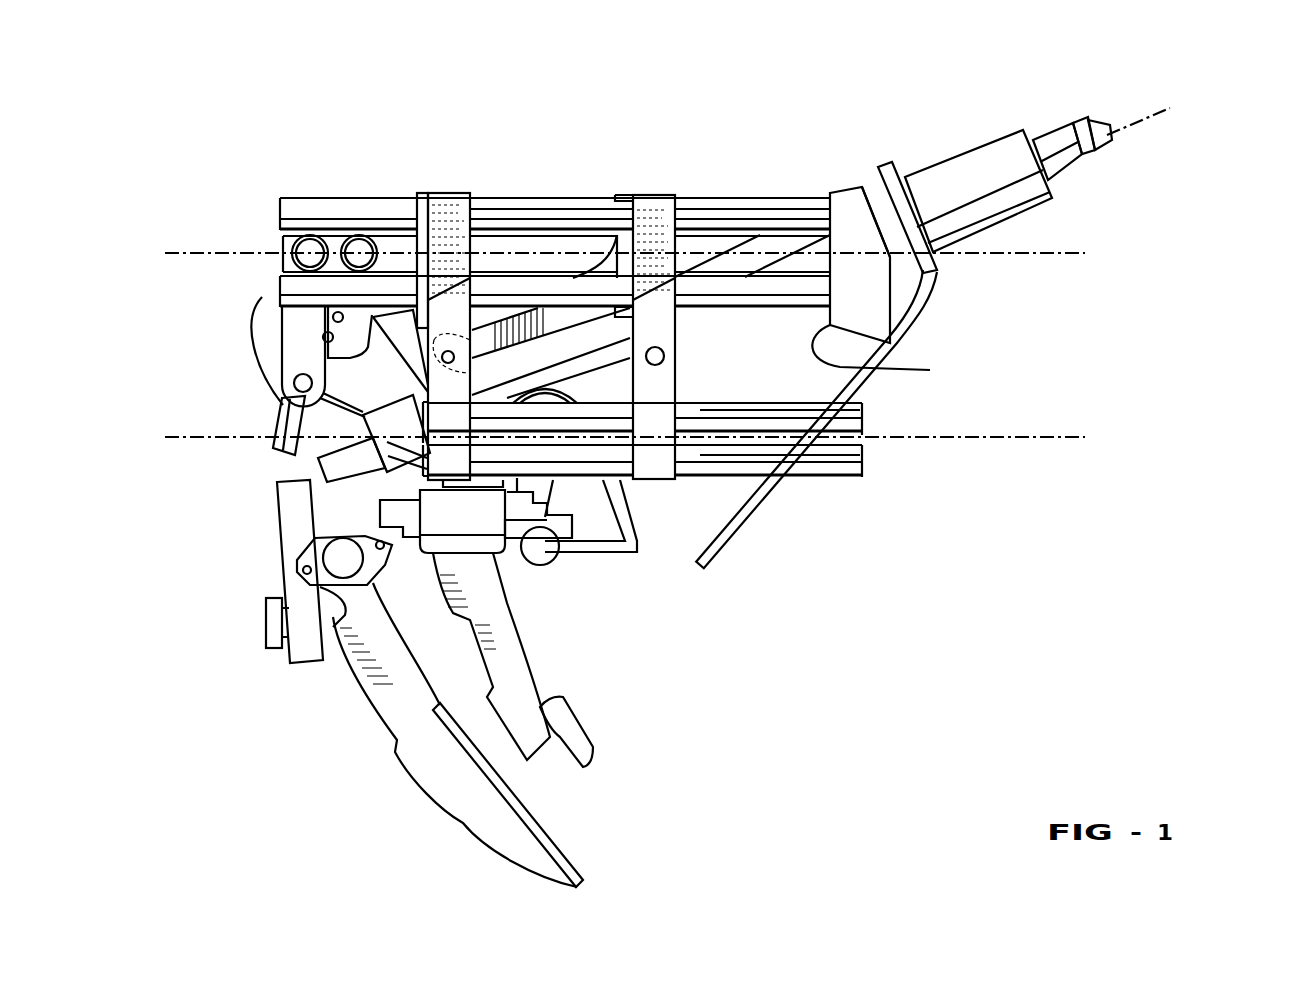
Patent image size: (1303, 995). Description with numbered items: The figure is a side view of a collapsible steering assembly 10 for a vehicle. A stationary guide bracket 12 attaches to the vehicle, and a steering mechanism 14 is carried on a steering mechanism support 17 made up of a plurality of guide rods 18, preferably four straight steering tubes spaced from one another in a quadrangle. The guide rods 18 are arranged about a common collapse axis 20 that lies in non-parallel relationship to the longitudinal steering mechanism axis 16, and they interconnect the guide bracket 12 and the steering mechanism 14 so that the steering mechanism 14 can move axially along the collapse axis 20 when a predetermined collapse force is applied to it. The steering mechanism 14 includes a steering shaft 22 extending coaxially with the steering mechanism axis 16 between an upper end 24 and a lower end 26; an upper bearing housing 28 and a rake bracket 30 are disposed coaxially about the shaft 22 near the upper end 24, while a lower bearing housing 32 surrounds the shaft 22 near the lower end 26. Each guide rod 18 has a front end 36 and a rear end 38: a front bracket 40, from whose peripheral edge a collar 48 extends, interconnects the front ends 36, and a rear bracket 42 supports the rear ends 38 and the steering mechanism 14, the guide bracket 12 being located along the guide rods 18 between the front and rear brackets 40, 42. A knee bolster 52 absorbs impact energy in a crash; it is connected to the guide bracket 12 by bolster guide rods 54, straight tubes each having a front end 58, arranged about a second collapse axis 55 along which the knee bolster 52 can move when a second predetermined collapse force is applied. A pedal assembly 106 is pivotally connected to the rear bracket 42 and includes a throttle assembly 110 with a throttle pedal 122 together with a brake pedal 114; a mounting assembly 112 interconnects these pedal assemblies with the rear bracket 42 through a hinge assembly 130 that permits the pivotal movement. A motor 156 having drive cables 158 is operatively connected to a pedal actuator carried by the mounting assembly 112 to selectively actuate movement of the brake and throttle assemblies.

The collapsible steering assembly 10 is at (870, 647).
The stationary guide bracket 12 is at (650, 197).
The steering mechanism 14 is at (1046, 141).
The steering mechanism axis 16 is at (1127, 125).
The steering mechanism support 17 is at (778, 203).
The guide rods 18 is at (547, 287).
The collapse axis 20 is at (1085, 256).
The steering shaft 22 is at (778, 270).
The upper end 24 is at (1107, 130).
The lower end 26 is at (310, 458).
The upper bearing housing 28 is at (1005, 147).
The rake bracket 30 is at (880, 162).
The lower bearing housing 32 is at (362, 480).
The front end 36 is at (812, 200).
The rear end 38 is at (299, 207).
The front bracket 40 is at (853, 190).
The rear bracket 42 is at (447, 205).
The collar 48 is at (855, 323).
The knee bolster 52 is at (735, 527).
The bolster guide rods 54 is at (697, 467).
The second collapse axis 55 is at (1068, 438).
The front end 58 is at (780, 460).
The pedal assembly 106 is at (527, 657).
The throttle assembly 110 is at (403, 742).
The mounting assembly 112 is at (310, 247).
The brake pedal 114 is at (593, 752).
The throttle pedal 122 is at (570, 850).
The hinge assembly 130 is at (423, 213).
The motor 156 is at (540, 566).
The drive cables 158 is at (602, 553).